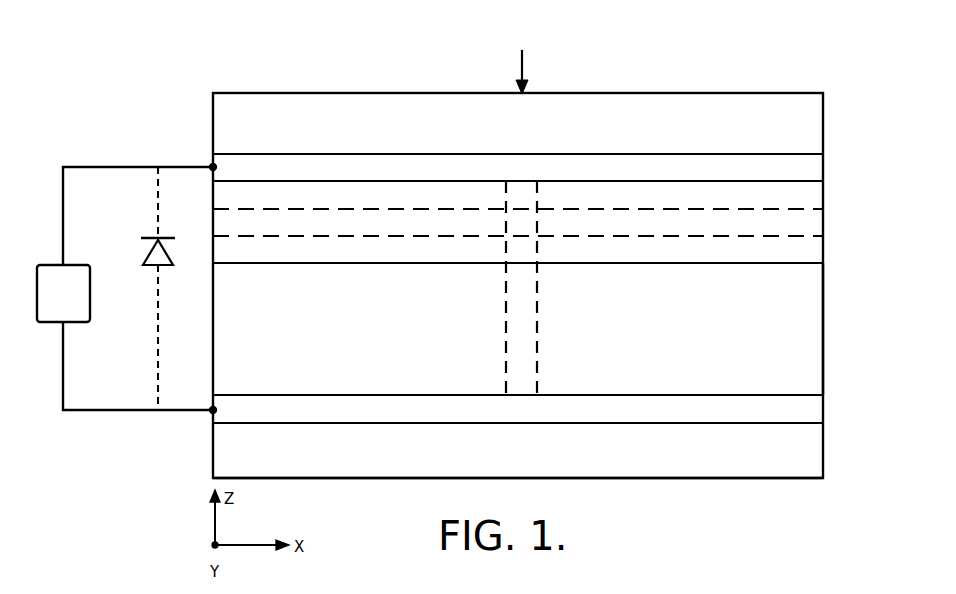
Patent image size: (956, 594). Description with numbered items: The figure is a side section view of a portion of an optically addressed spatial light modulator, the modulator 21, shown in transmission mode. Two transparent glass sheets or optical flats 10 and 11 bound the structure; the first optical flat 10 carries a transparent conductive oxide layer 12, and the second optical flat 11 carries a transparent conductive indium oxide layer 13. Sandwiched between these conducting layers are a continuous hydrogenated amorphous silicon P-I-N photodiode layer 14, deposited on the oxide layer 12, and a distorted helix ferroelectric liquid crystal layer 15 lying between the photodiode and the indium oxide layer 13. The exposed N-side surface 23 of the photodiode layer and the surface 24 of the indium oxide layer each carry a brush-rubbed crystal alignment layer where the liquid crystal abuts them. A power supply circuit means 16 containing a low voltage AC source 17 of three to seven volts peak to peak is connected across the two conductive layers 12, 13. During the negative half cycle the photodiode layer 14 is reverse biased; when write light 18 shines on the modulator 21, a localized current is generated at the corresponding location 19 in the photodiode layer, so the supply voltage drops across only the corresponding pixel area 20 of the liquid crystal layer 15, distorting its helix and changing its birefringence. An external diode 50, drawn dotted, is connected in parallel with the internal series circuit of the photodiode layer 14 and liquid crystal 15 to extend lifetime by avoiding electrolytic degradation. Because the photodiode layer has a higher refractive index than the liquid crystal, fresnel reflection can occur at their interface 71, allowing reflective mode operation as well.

The optical flat 10 is at (730, 122).
The second optical flat 11 is at (688, 462).
The transparent conductive oxide layer 12 is at (233, 165).
The indium oxide conductive layer 13 is at (247, 413).
The photodiode layer 14 is at (835, 181).
The liquid crystal layer 15 is at (835, 265).
The power supply circuit means 16 is at (92, 167).
The AC voltage source 17 is at (52, 322).
The write light 18 is at (524, 62).
The pixel location in photodiode layer 19 is at (524, 226).
The pixel area of liquid crystal layer 20 is at (515, 343).
The modulator 21 is at (240, 71).
The exposed surface of N layer 23 is at (362, 263).
The surface of indium oxide layer 24 is at (345, 394).
The external diode 50 is at (152, 266).
The interface 71 is at (720, 263).